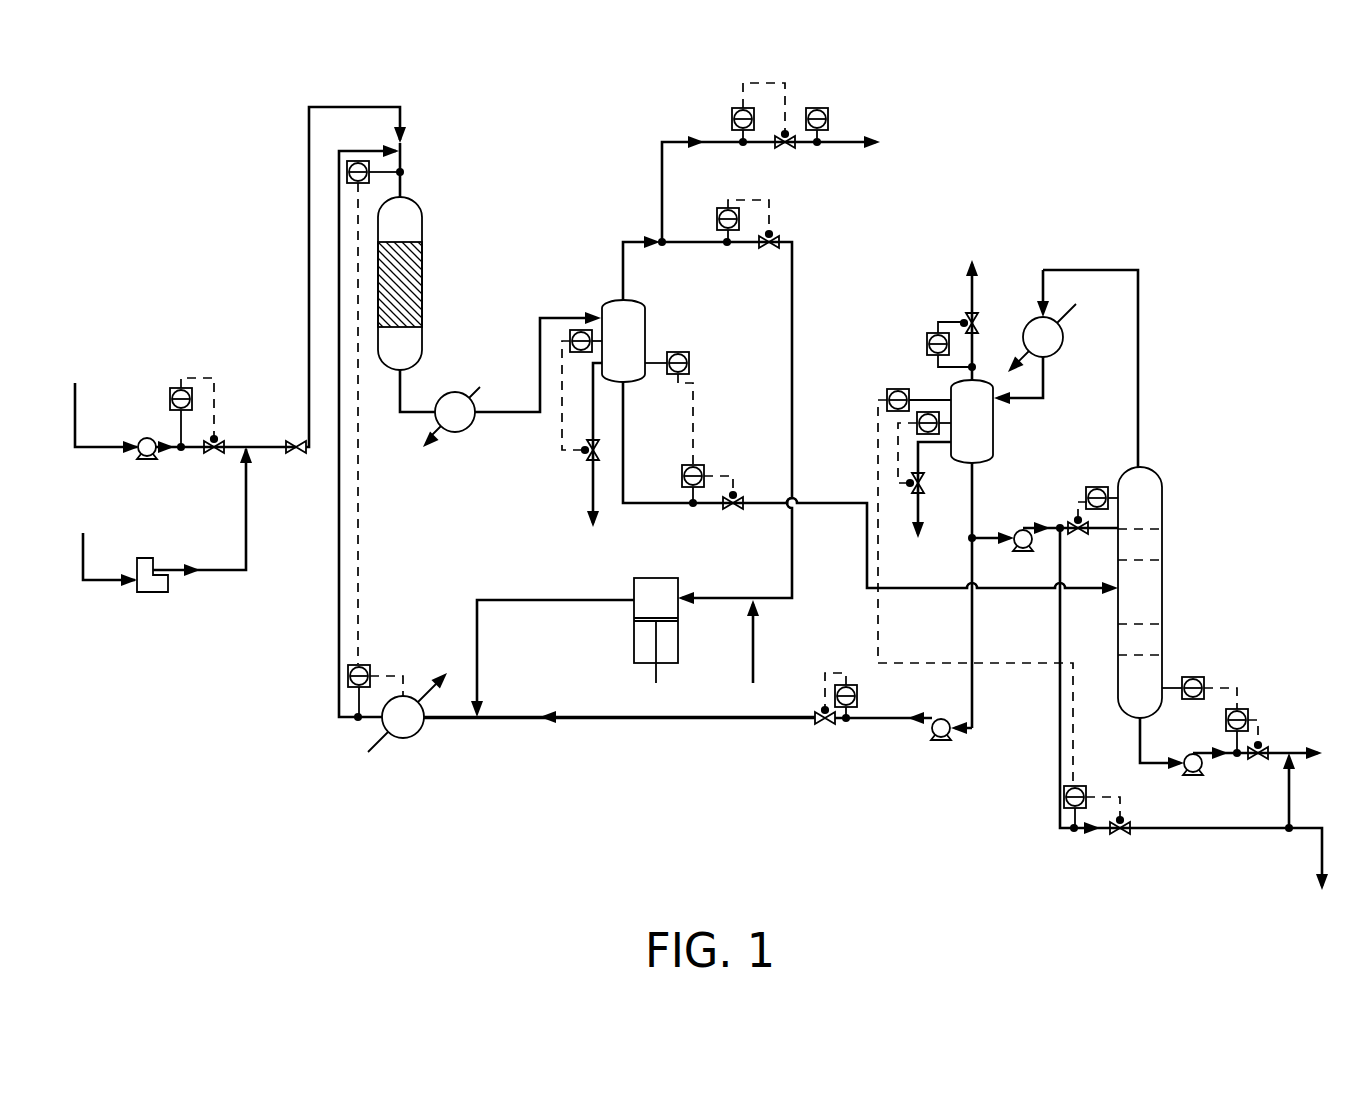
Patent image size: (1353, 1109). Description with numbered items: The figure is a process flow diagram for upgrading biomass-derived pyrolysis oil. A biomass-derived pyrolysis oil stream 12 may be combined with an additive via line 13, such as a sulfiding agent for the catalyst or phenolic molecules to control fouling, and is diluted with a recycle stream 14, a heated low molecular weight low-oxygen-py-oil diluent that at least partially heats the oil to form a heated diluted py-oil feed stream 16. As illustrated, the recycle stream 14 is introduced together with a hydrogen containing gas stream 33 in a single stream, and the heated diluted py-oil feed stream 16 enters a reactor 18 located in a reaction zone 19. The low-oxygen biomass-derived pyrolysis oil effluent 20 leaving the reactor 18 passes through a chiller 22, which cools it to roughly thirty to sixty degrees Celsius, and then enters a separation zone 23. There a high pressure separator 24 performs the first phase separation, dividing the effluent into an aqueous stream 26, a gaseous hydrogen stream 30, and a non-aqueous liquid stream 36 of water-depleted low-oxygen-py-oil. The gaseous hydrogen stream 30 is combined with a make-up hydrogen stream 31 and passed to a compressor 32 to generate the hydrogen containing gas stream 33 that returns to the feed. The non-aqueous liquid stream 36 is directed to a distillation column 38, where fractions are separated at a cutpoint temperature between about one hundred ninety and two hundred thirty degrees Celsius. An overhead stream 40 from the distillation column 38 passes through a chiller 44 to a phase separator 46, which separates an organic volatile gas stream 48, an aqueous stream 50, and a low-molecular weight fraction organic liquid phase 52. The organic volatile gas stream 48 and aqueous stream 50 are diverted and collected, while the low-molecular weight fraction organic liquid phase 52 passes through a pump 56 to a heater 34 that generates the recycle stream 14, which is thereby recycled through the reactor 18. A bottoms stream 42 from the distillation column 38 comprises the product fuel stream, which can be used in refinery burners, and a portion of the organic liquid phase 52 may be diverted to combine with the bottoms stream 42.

The biomass-derived pyrolysis oil stream 12 is at (75, 405).
The line 13 is at (246, 504).
The recycle stream 14 is at (339, 504).
The heated diluted py-oil feed stream 16 is at (402, 190).
The reactor 18 is at (422, 214).
The reaction zone 19 is at (471, 272).
The low-oxygen biomass-derived pyrolysis oil effluent 20 is at (402, 393).
The chiller 22 is at (456, 432).
The separation zone 23 is at (1024, 146).
The high pressure separator 24 is at (617, 300).
The aqueous stream 26 is at (593, 485).
The gaseous hydrogen stream 30 is at (792, 347).
The make-up hydrogen stream 31 is at (753, 648).
The compressor 32 is at (678, 640).
The hydrogen containing gas stream 33 is at (477, 620).
The heater 34 is at (405, 739).
The non-aqueous liquid stream 36 is at (623, 425).
The distillation column 38 is at (1150, 467).
The overhead stream 40 is at (1138, 378).
The bottoms stream 42 is at (1140, 733).
The chiller 44 is at (1063, 336).
The phase separator 46 is at (993, 422).
The organic volatile gas stream 48 is at (973, 296).
The aqueous stream 50 is at (920, 510).
The low-molecular weight fraction organic liquid phase 52 is at (972, 497).
The pump 56 is at (951, 737).